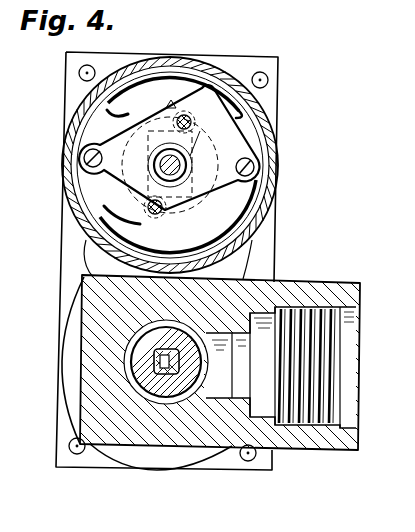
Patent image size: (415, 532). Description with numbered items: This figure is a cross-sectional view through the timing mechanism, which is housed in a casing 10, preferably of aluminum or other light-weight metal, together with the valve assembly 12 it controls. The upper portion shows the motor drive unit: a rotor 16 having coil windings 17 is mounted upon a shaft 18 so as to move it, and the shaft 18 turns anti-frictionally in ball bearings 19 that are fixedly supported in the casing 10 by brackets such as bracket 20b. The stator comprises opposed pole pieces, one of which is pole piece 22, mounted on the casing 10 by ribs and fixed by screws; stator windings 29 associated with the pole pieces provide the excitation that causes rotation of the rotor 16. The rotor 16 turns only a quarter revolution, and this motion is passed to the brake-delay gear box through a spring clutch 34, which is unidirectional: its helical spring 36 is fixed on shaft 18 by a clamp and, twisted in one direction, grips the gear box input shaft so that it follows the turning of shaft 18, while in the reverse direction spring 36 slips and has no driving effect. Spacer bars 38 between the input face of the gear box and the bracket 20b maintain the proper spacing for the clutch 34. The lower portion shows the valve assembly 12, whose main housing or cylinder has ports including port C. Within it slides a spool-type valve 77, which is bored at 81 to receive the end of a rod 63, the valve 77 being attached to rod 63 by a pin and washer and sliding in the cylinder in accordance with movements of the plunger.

The casing 10 is at (252, 256).
The valve assembly 12 is at (345, 285).
The rotor 16 is at (172, 108).
The coil windings 17 is at (268, 160).
The shaft 18 is at (160, 167).
The ball bearings 19 is at (169, 147).
The bracket 20b is at (262, 131).
The pole piece 22 is at (214, 99).
The stator windings 29 is at (241, 116).
The spring clutch 34 is at (190, 156).
The helical spring 36 is at (157, 153).
The spacer bars 38 is at (148, 203).
The rod 63 is at (152, 357).
The spool-type valve 77 is at (150, 385).
The bore 81 is at (180, 364).
The port C is at (330, 347).